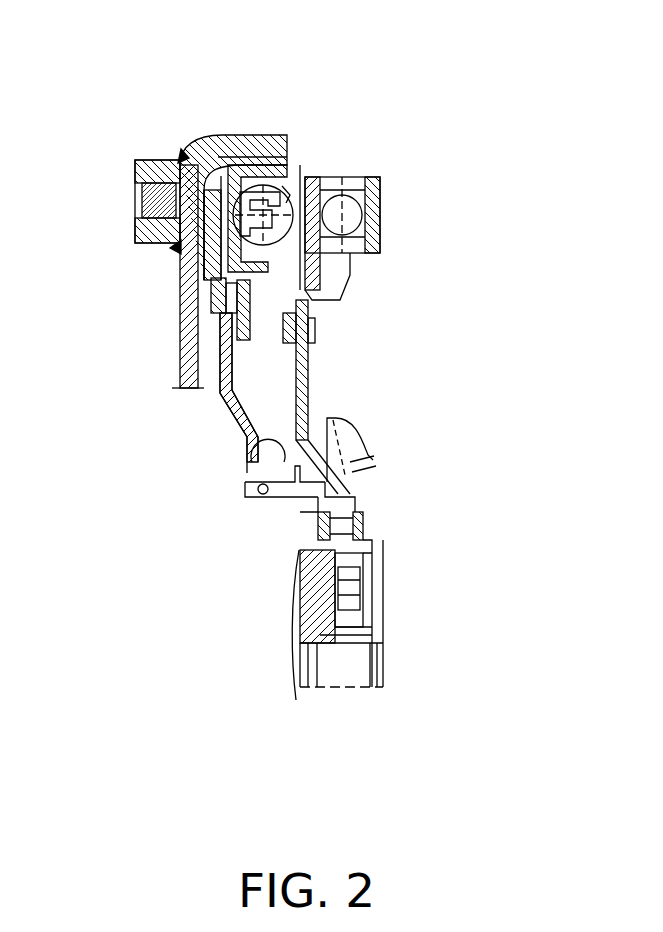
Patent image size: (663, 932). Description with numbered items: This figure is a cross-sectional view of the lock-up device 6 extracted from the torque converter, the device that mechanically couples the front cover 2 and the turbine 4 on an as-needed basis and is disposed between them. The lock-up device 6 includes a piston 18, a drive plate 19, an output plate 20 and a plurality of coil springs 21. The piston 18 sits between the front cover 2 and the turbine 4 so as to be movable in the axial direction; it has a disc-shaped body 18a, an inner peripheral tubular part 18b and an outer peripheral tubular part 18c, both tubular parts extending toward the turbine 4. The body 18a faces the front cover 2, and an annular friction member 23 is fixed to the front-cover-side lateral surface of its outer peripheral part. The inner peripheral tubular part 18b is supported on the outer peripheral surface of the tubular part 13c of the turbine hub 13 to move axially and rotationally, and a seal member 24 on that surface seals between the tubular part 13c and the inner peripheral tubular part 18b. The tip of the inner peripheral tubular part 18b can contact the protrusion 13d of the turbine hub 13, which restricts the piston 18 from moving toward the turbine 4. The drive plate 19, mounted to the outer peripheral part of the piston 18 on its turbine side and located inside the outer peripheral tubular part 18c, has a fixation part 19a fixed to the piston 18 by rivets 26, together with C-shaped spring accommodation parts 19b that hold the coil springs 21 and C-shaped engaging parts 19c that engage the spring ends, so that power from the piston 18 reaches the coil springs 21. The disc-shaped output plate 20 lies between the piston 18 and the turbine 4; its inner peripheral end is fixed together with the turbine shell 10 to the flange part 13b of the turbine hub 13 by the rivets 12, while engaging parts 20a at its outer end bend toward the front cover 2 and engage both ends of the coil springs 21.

The front cover 2 is at (180, 306).
The turbine 4 is at (372, 427).
The lock-up device 6 is at (218, 406).
The turbine shell 10 is at (330, 420).
The rivets 12 is at (347, 523).
The turbine hub 13 is at (281, 631).
The flange part 13b is at (358, 500).
The tubular part 13c is at (288, 505).
The protrusion 13d is at (360, 470).
The piston 18 is at (238, 428).
The body 18a is at (222, 356).
The inner peripheral tubular part 18b is at (247, 463).
The outer peripheral tubular part 18c is at (263, 134).
The drive plate 19 is at (256, 272).
The fixation part 19a is at (227, 328).
The spring accommodation parts 19b is at (284, 200).
The engaging parts 19c is at (172, 248).
The output plate 20 is at (315, 372).
The engaging parts 20a is at (248, 190).
The coil springs 21 is at (305, 177).
The friction member 23 is at (180, 158).
The seal member 24 is at (283, 492).
The rivets 26 is at (340, 298).